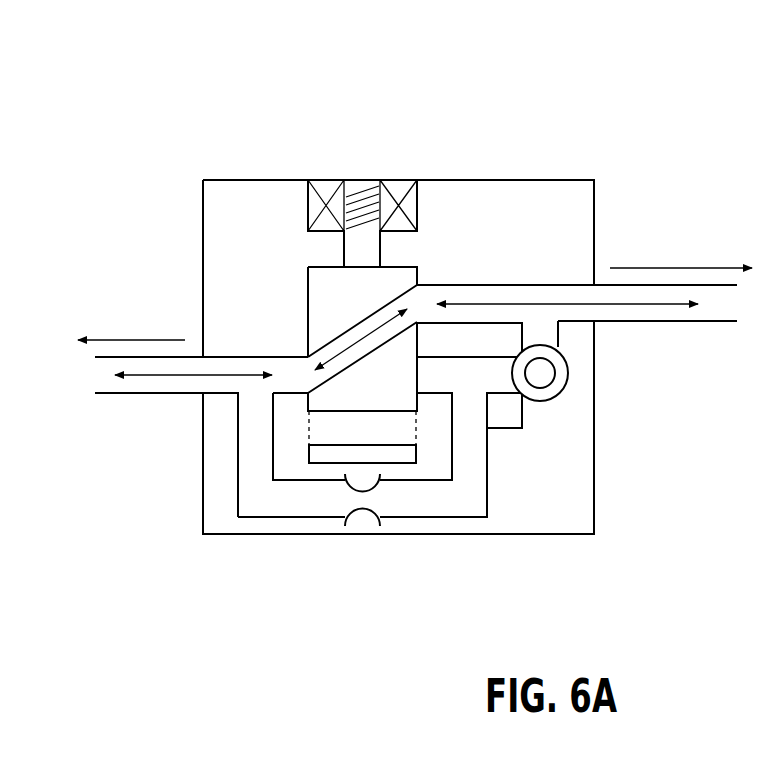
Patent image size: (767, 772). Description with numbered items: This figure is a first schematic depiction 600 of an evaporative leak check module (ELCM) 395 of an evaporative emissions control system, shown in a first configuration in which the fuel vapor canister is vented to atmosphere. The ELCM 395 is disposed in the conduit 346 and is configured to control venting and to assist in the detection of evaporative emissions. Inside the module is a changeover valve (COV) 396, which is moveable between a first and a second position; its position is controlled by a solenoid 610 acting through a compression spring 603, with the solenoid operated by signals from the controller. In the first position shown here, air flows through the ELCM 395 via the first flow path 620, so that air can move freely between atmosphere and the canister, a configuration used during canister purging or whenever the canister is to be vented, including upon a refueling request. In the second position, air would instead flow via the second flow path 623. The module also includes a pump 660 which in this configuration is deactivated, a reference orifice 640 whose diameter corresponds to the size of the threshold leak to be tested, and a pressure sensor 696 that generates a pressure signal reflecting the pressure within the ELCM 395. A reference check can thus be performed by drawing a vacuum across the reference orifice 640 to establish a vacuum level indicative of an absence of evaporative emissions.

The first schematic depiction 600 is at (413, 313).
The evaporative leak check module 395 is at (240, 180).
The compression spring 603 is at (362, 180).
The solenoid 610 is at (399, 180).
The changeover valve 396 is at (333, 341).
The first flow path 620 is at (369, 318).
The second flow path 623 is at (408, 409).
The pump 660 is at (560, 393).
The pressure sensor 696 is at (523, 425).
The reference orifice 640 is at (374, 503).
The conduit 346 is at (150, 395).